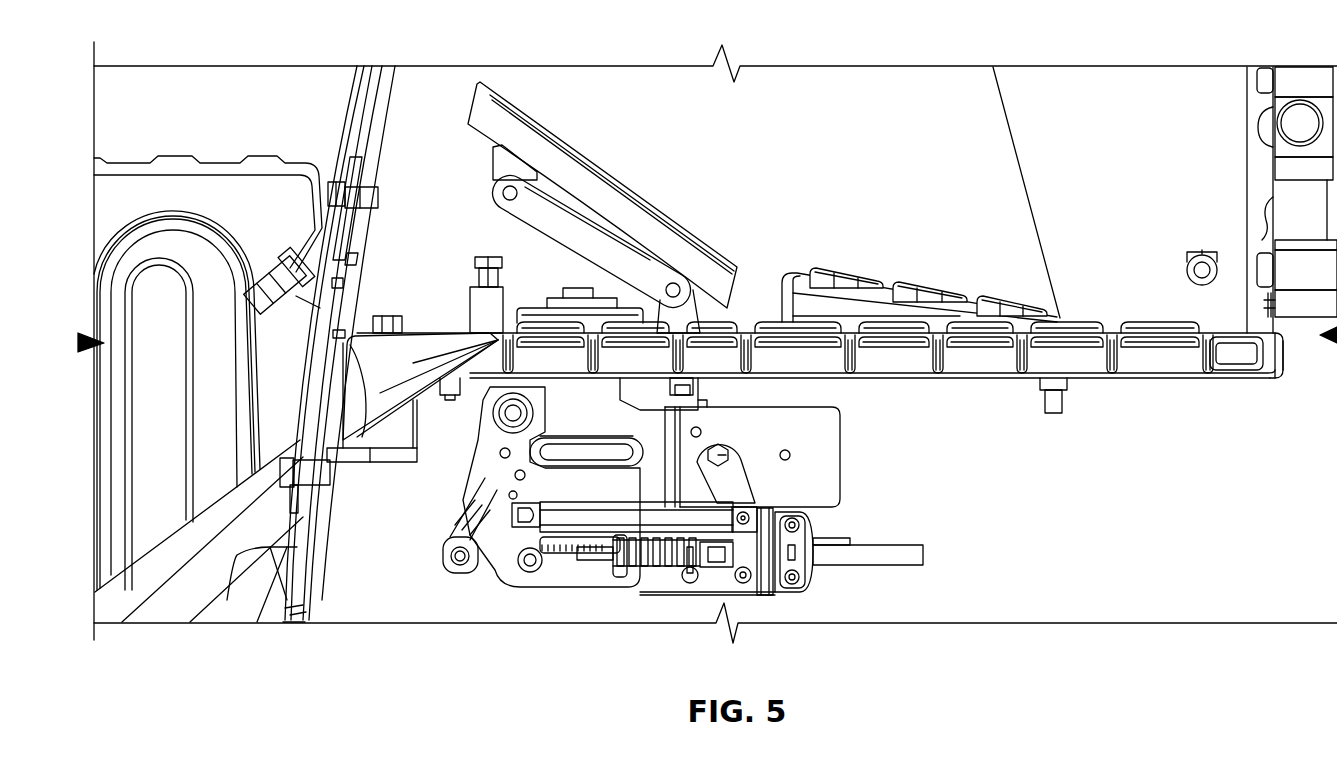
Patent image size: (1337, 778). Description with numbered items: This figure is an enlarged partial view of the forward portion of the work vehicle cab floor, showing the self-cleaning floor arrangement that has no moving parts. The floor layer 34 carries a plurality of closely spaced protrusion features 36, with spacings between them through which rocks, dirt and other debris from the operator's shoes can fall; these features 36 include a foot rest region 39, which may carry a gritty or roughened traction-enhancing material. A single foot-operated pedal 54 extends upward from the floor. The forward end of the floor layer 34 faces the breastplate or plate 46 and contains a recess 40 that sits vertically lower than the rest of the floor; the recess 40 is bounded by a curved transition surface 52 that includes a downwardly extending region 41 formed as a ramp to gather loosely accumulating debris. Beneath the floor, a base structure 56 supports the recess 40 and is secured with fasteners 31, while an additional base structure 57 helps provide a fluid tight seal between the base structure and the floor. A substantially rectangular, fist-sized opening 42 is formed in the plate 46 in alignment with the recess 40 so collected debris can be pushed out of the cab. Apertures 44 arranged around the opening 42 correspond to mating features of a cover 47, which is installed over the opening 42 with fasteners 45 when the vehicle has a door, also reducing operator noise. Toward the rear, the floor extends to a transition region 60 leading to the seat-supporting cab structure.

The fasteners 31 is at (386, 316).
The floor layer 34 is at (1235, 330).
The features 36 is at (742, 321).
The foot rest region 39 is at (793, 277).
The recess 40 is at (393, 390).
The downwardly extending region 41 is at (427, 380).
The opening 42 is at (333, 382).
The apertures 44 is at (378, 185).
The fasteners 45 is at (331, 183).
The plate 46 is at (307, 590).
The cover 47 is at (325, 226).
The transition surface 52 is at (478, 333).
The foot-operated pedal 54 is at (630, 178).
The base structure 56 is at (350, 462).
The base structure 57 is at (1127, 383).
The transition region 60 is at (1248, 177).